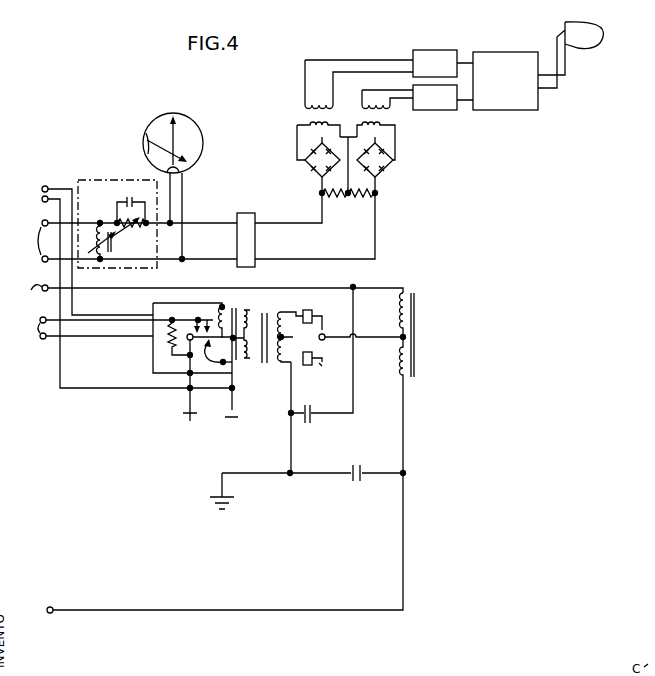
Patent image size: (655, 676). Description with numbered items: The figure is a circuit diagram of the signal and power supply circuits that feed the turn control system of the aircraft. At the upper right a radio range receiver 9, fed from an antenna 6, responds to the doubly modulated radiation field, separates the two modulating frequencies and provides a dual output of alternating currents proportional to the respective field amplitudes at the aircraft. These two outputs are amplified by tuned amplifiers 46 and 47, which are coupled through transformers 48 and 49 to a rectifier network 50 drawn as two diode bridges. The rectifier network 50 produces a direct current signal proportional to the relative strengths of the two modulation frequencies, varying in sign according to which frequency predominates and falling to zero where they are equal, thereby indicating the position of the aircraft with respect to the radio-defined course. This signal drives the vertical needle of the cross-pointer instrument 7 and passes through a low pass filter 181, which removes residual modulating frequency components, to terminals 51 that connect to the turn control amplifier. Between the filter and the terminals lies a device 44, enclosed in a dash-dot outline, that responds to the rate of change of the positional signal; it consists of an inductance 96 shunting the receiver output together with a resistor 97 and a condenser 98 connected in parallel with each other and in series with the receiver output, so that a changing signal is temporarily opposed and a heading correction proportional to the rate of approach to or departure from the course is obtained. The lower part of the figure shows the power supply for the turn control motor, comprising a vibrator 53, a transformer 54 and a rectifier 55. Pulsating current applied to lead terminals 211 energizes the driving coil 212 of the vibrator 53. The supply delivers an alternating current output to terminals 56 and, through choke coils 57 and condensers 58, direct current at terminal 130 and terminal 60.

The antenna 6 is at (601, 37).
The cross-pointer instrument 7 is at (150, 130).
The radio range receiver 9 is at (530, 111).
The device 44 is at (85, 181).
The tuned amplifier 46 is at (456, 48).
The tuned amplifier 47 is at (443, 107).
The transformer 48 is at (307, 119).
The transformer 49 is at (387, 119).
The rectifier network 50 is at (306, 168).
The terminals 51 is at (37, 241).
The vibrator 53 is at (229, 365).
The transformer 54 is at (263, 363).
The rectifier 55 is at (316, 362).
The terminals 56 is at (31, 328).
The choke coils 57 is at (413, 352).
The condensers 58 is at (355, 466).
The terminal 60 is at (33, 291).
The inductance 96 is at (99, 231).
The resistor 97 is at (130, 233).
The condenser 98 is at (127, 197).
The terminal 130 is at (34, 612).
The low pass filter 181 is at (262, 212).
The lead terminals 211 is at (40, 190).
The driving coil 212 is at (226, 312).